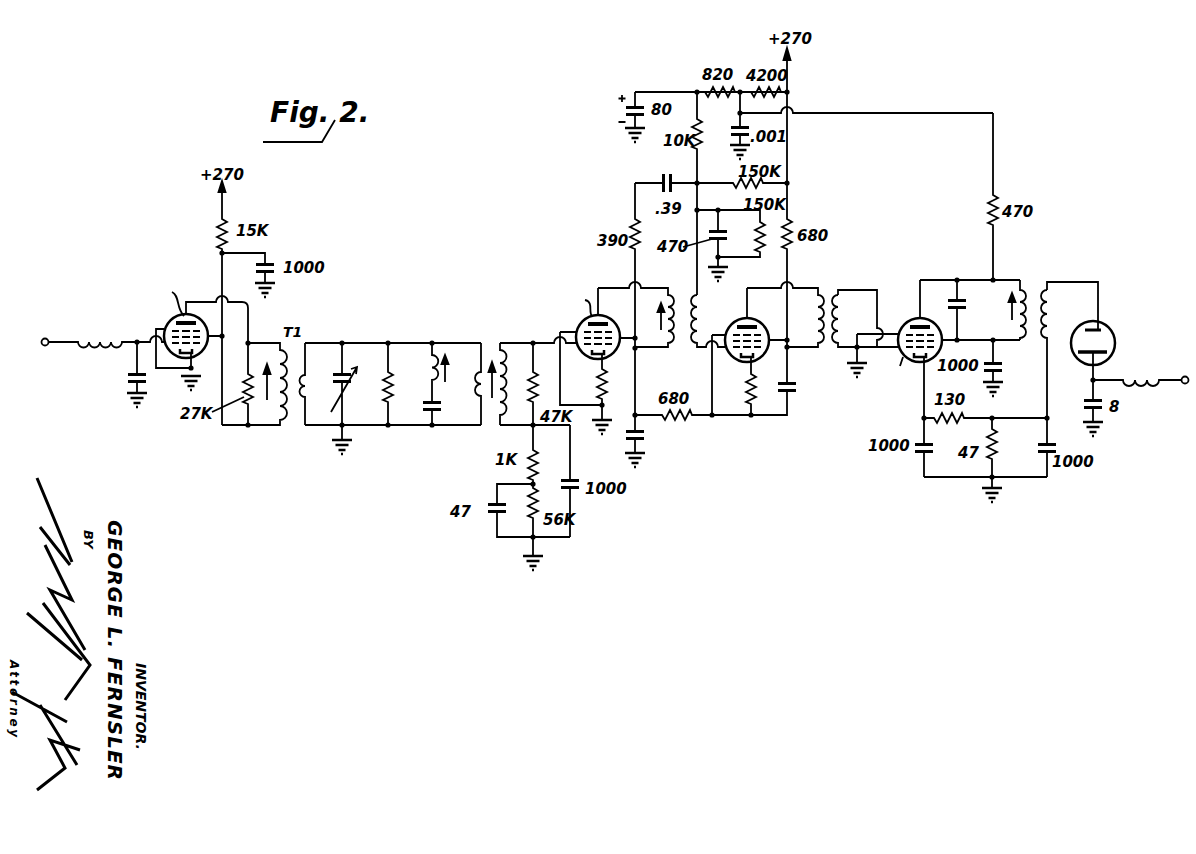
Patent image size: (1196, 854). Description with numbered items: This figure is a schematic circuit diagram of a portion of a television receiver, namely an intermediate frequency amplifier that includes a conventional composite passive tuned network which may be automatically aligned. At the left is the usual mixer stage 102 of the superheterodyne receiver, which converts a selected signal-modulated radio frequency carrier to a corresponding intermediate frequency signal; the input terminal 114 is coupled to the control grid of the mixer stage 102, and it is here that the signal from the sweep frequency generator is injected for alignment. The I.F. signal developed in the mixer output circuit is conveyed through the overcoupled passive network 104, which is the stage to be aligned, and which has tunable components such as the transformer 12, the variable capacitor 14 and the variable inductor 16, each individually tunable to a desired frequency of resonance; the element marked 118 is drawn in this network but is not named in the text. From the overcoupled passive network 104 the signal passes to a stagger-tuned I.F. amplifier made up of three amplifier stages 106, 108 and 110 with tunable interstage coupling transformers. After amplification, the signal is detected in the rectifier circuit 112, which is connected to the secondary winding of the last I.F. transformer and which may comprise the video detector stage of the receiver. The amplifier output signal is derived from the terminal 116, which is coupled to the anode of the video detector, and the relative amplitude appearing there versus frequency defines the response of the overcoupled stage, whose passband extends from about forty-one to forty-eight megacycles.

The mixer stage 102 is at (164, 323).
The overcoupled passive network 104 is at (398, 385).
The amplifier stage 106 is at (577, 327).
The amplifier stage 108 is at (738, 317).
The amplifier stage 110 is at (907, 310).
The rectifier circuit 112 is at (1140, 319).
The input terminal 114 is at (41, 356).
The terminal 116 is at (1180, 394).
The variable capacitor C118 118 is at (345, 397).
The transformer 12 is at (688, 371).
The variable capacitor 14 is at (827, 370).
The variable inductor 16 is at (1037, 366).